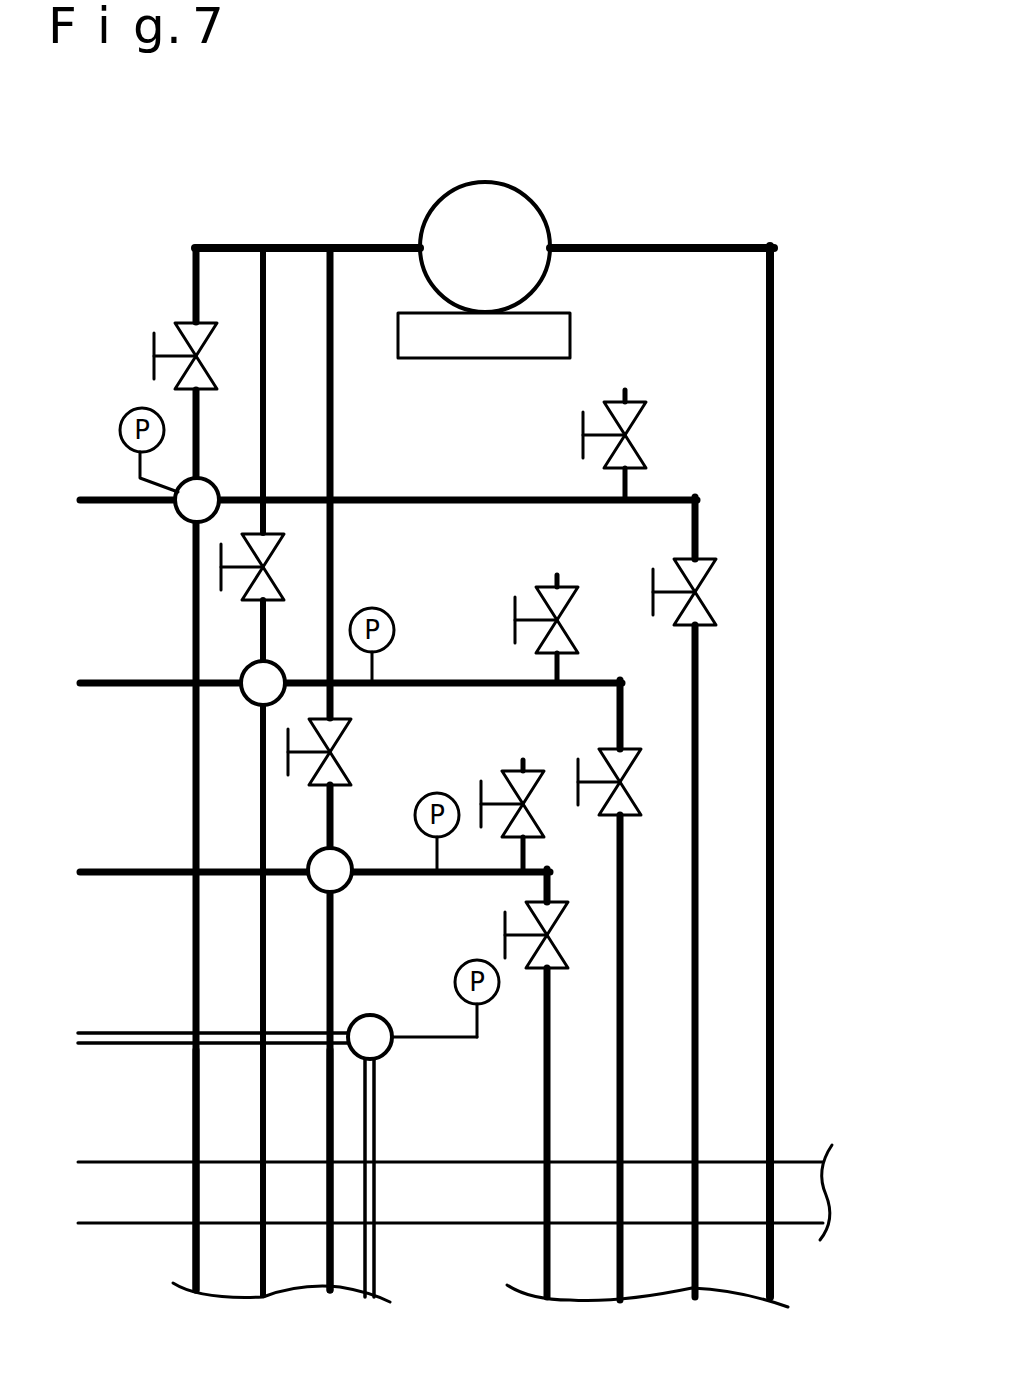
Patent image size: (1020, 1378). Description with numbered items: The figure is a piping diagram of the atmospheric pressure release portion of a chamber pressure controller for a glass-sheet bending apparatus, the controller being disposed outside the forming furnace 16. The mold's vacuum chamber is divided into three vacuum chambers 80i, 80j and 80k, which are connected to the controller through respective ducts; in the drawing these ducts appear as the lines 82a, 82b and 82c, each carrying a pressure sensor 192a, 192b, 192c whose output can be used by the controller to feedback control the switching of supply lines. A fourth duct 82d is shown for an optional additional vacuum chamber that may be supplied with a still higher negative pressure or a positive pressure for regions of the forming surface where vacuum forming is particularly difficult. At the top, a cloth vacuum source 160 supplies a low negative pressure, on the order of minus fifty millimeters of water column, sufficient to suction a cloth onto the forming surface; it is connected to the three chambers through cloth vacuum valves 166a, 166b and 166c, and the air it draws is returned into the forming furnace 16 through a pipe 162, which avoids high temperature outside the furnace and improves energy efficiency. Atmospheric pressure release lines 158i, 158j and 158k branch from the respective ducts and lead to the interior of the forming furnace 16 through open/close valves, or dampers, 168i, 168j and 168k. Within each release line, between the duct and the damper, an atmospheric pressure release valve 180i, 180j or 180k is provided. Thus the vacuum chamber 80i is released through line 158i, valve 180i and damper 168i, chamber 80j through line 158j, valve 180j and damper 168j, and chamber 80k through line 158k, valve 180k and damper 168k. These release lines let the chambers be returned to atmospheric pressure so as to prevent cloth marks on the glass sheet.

The forming furnace 16 is at (138, 1228).
The cloth vacuum source 160 is at (540, 175).
The pipe 162 is at (695, 241).
The vacuum chamber 80i is at (192, 794).
The vacuum chamber 80k is at (259, 796).
The vacuum chamber 80j is at (324, 794).
The duct 82a is at (192, 1134).
The duct 82b is at (258, 1103).
The duct 82c is at (324, 1069).
The duct 82d is at (378, 1090).
The atmospheric pressure release line 158i is at (470, 497).
The atmospheric pressure release line 158k is at (420, 683).
The atmospheric pressure release line 158j is at (387, 880).
The cloth vacuum valve 166a is at (187, 317).
The cloth vacuum valve 166b is at (273, 530).
The cloth vacuum valve 166c is at (345, 788).
The pressure sensor 192a is at (125, 418).
The pressure sensor 192b is at (392, 612).
The pressure sensor 192c is at (430, 793).
The atmospheric pressure release valve 180i is at (632, 400).
The atmospheric pressure release valve 180k is at (563, 583).
The atmospheric pressure release valve 180j is at (532, 770).
The open/close valve 168i is at (703, 626).
The open/close valve 168k is at (632, 820).
The open/close valve 168j is at (565, 973).